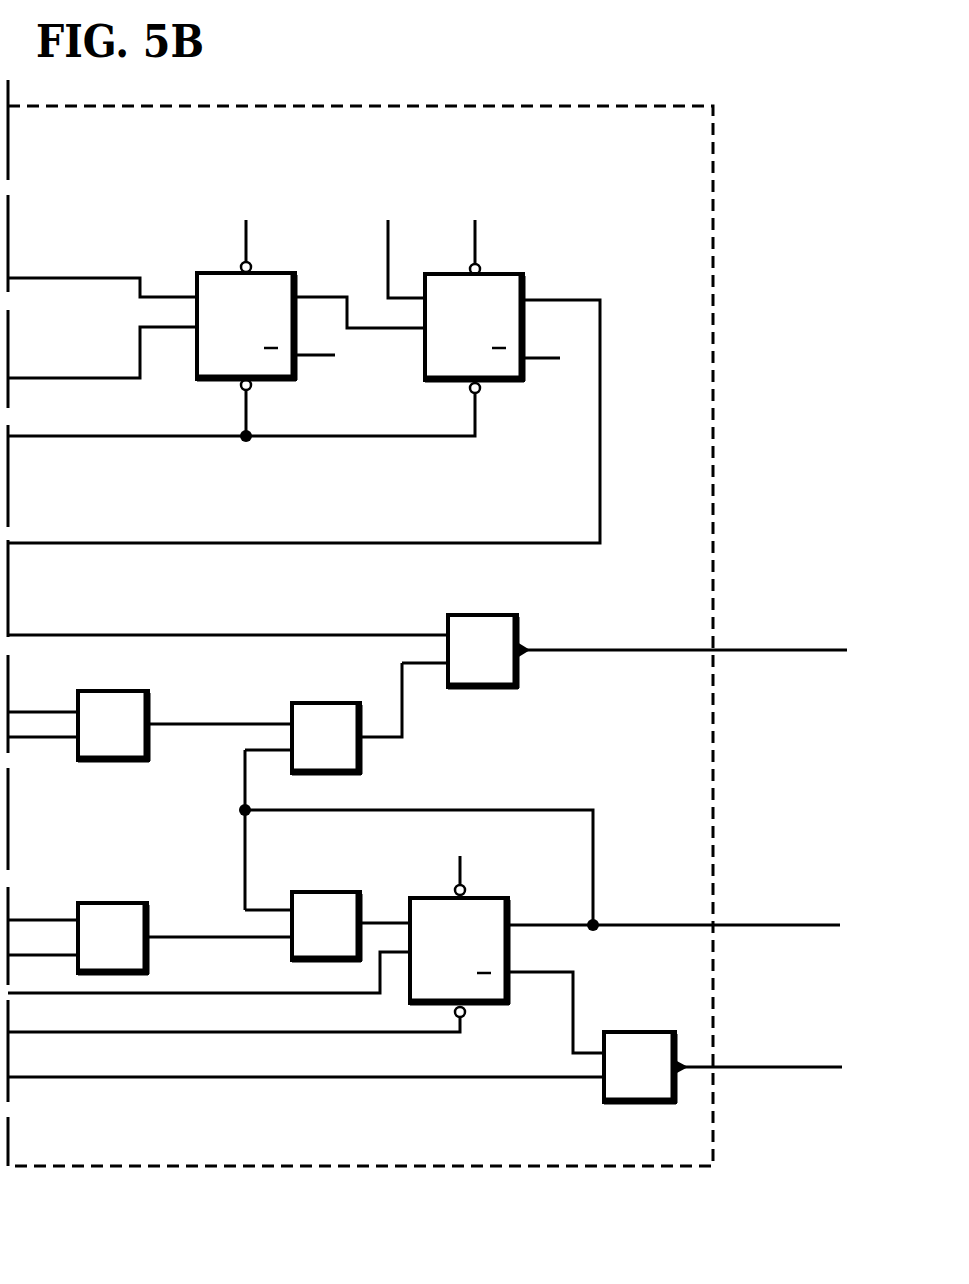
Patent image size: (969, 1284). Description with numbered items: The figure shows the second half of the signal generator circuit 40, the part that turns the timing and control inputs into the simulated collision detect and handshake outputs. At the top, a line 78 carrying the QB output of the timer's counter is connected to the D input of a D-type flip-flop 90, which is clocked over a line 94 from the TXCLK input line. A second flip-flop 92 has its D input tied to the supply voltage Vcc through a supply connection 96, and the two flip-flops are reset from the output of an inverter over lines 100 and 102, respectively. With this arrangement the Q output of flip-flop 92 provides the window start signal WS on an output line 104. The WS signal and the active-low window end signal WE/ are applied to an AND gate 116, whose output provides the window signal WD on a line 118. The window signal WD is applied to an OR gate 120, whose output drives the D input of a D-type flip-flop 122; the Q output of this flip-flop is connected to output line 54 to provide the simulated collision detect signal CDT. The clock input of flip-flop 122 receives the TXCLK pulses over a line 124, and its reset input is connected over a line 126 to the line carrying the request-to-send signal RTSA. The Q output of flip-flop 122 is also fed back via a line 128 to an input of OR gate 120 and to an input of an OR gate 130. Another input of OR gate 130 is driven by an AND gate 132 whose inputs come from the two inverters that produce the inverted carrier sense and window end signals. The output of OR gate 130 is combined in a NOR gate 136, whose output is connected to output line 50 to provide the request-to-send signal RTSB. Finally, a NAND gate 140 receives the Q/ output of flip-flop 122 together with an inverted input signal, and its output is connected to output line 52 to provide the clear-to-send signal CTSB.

The signal generator circuit 40 is at (713, 222).
The line 78 is at (72, 278).
The line 94 is at (96, 378).
The D-type flip-flop 90 is at (272, 273).
The flip-flop 92 is at (500, 274).
The supply voltage line 96 is at (388, 288).
The line 100 is at (246, 420).
The line 102 is at (385, 437).
The output line 104 is at (600, 327).
The NOR gate 136 is at (508, 615).
The output line 50 is at (735, 652).
The AND gate 132 is at (108, 760).
The OR gate 130 is at (296, 703).
The line 128 is at (515, 810).
The AND gate 116 is at (112, 903).
The line 118 is at (190, 938).
The OR gate 120 is at (322, 892).
The D-type flip-flop 122 is at (497, 898).
The line 124 is at (248, 995).
The line 126 is at (345, 1033).
The output line 54 is at (730, 927).
The NAND gate 140 is at (620, 1102).
The output line 52 is at (730, 1068).